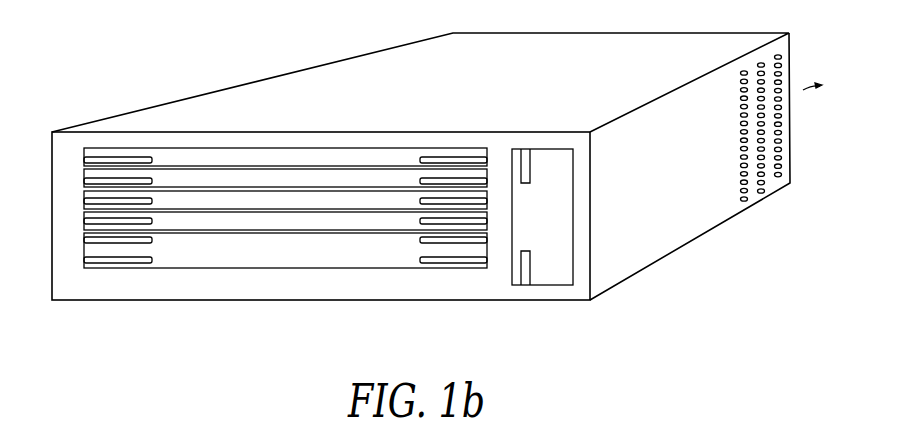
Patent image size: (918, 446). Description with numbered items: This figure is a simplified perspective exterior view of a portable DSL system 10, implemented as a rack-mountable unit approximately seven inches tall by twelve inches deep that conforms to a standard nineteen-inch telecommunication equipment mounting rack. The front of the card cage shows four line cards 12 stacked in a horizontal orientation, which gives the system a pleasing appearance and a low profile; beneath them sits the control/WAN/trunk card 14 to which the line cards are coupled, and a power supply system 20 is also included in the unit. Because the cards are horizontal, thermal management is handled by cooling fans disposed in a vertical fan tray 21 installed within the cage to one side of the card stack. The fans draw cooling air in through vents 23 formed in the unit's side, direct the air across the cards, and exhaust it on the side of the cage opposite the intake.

The portable DSL system 10 is at (197, 63).
The line cards 12 is at (227, 178).
The control/WAN/trunk card 14 is at (187, 258).
The power supply system 20 is at (325, 295).
The vertical fan tray 21 is at (545, 162).
The vents 23 is at (732, 138).